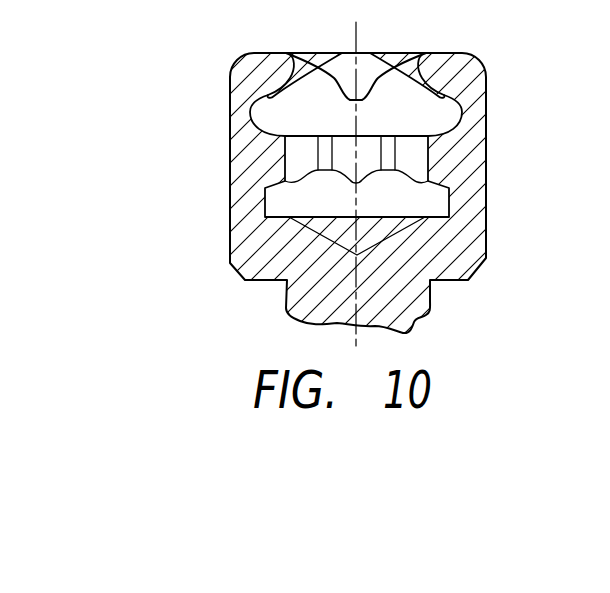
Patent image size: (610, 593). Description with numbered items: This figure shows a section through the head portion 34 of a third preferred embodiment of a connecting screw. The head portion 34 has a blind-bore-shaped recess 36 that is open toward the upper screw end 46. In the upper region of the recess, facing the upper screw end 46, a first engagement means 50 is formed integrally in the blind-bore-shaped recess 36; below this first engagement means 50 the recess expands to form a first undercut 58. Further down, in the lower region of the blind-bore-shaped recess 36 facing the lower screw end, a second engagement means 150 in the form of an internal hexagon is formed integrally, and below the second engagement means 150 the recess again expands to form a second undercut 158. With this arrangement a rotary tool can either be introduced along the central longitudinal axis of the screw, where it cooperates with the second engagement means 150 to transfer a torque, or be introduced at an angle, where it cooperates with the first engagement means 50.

The head portion 34 is at (305, 175).
The blind-bore-shaped recess 36 is at (402, 101).
The upper screw end 46 is at (462, 53).
The first engagement means 50 is at (264, 75).
The first undercut 58 is at (446, 123).
The second engagement means 150 is at (264, 163).
The second undercut 158 is at (440, 207).